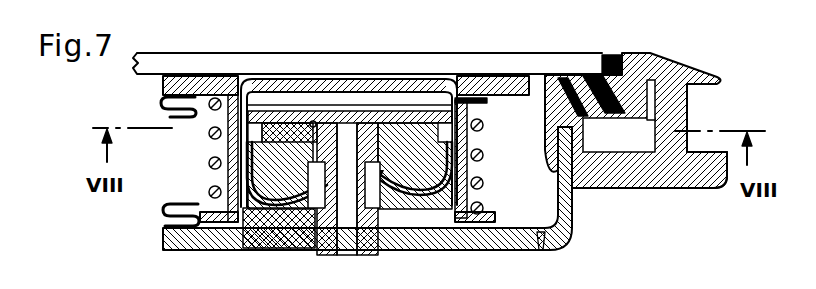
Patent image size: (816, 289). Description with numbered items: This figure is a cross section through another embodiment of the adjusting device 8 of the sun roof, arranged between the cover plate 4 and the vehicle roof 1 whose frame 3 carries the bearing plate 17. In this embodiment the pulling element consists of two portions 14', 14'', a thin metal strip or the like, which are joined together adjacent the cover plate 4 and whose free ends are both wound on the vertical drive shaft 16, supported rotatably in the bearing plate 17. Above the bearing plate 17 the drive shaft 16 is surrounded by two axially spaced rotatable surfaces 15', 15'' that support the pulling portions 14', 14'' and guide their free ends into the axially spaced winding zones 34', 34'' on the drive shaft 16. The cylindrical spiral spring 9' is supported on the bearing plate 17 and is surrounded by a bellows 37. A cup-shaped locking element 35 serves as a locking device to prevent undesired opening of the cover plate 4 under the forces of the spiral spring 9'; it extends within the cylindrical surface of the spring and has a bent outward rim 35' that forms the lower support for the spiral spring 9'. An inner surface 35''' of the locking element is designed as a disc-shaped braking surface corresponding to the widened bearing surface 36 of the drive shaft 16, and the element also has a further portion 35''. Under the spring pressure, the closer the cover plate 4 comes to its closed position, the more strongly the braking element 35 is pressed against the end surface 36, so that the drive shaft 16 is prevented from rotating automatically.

The vehicle roof 1 is at (707, 102).
The frame 3 is at (663, 73).
The cover plate 4 is at (498, 63).
The adjusting device 8 is at (151, 232).
The cylindrical spiral spring 9' is at (199, 148).
The pulling portion 14' is at (295, 118).
The pulling portion 14'' is at (413, 116).
The rotatable surface 15' is at (257, 188).
The rotatable surface 15'' is at (448, 191).
The drive shaft 16 is at (322, 242).
The bearing plate 17 is at (497, 247).
The winding zone 34' is at (287, 202).
The winding zone 34'' is at (414, 202).
The cup-shaped locking element 35 is at (497, 166).
The bent outward rim 35' is at (496, 210).
The spring upper bar 35'' is at (491, 104).
The disc-shaped braking surface 35''' is at (338, 77).
The widened bearing surface 36 is at (300, 114).
The bellows 37 is at (177, 201).